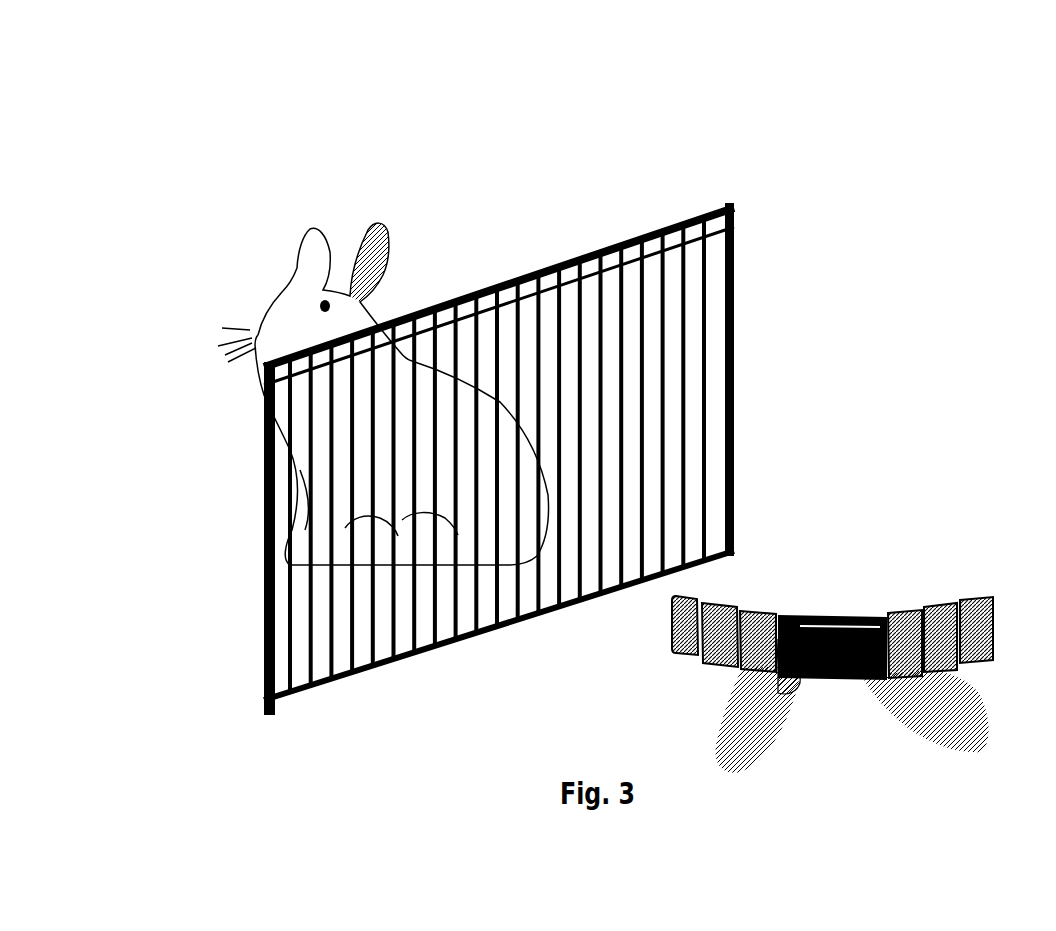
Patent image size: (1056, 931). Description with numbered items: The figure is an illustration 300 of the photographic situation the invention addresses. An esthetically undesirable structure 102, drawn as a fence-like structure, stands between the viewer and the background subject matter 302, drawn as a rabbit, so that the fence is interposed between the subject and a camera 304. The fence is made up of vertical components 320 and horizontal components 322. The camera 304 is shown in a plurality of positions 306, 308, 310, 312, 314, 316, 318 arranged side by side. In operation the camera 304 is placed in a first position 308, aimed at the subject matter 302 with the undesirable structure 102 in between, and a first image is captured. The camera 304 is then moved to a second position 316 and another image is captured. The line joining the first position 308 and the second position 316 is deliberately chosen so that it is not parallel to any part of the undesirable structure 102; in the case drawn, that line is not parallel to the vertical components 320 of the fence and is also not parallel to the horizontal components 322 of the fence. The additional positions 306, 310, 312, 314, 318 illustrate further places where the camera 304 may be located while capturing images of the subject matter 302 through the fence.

The illustration 300 is at (808, 164).
The esthetically undesirable structure 102 is at (507, 427).
The background subject matter 302 is at (384, 238).
The horizontal components 322 is at (575, 280).
The vertical components 320 is at (284, 641).
The camera 304 is at (833, 614).
The position 306 is at (684, 668).
The first position 308 is at (708, 672).
The position 310 is at (763, 603).
The position 312 is at (835, 690).
The position 314 is at (907, 607).
The second position 316 is at (936, 598).
The position 318 is at (985, 588).